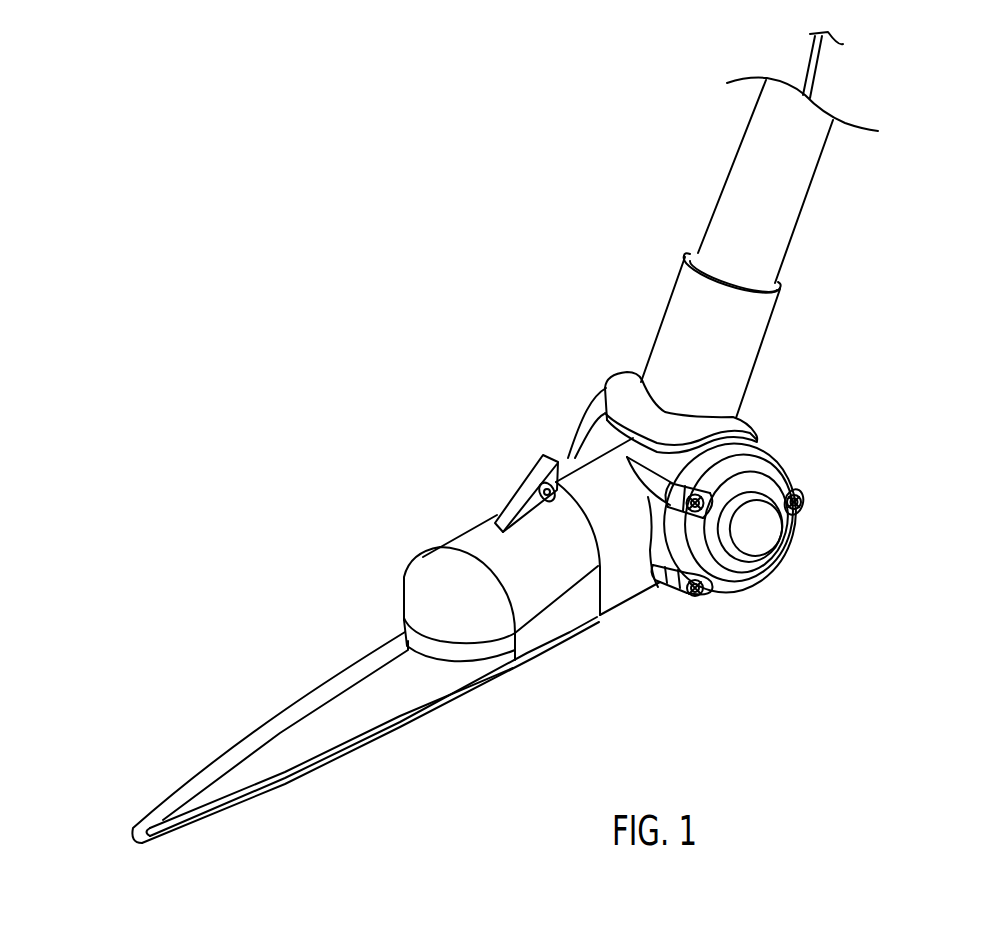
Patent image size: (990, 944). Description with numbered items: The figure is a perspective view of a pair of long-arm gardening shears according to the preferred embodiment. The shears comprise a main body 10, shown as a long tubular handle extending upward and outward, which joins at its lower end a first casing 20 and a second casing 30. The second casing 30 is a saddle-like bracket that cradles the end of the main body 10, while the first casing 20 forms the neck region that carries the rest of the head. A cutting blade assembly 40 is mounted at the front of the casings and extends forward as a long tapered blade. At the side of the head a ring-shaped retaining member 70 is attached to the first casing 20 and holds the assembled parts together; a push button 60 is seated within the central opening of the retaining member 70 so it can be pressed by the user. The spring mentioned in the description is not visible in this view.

The main body 10 is at (776, 326).
The first casing 20 is at (657, 537).
The second casing 30 is at (587, 420).
The cutting blade assembly 40 is at (427, 552).
The push button 60 is at (755, 542).
The retaining member 70 is at (783, 452).